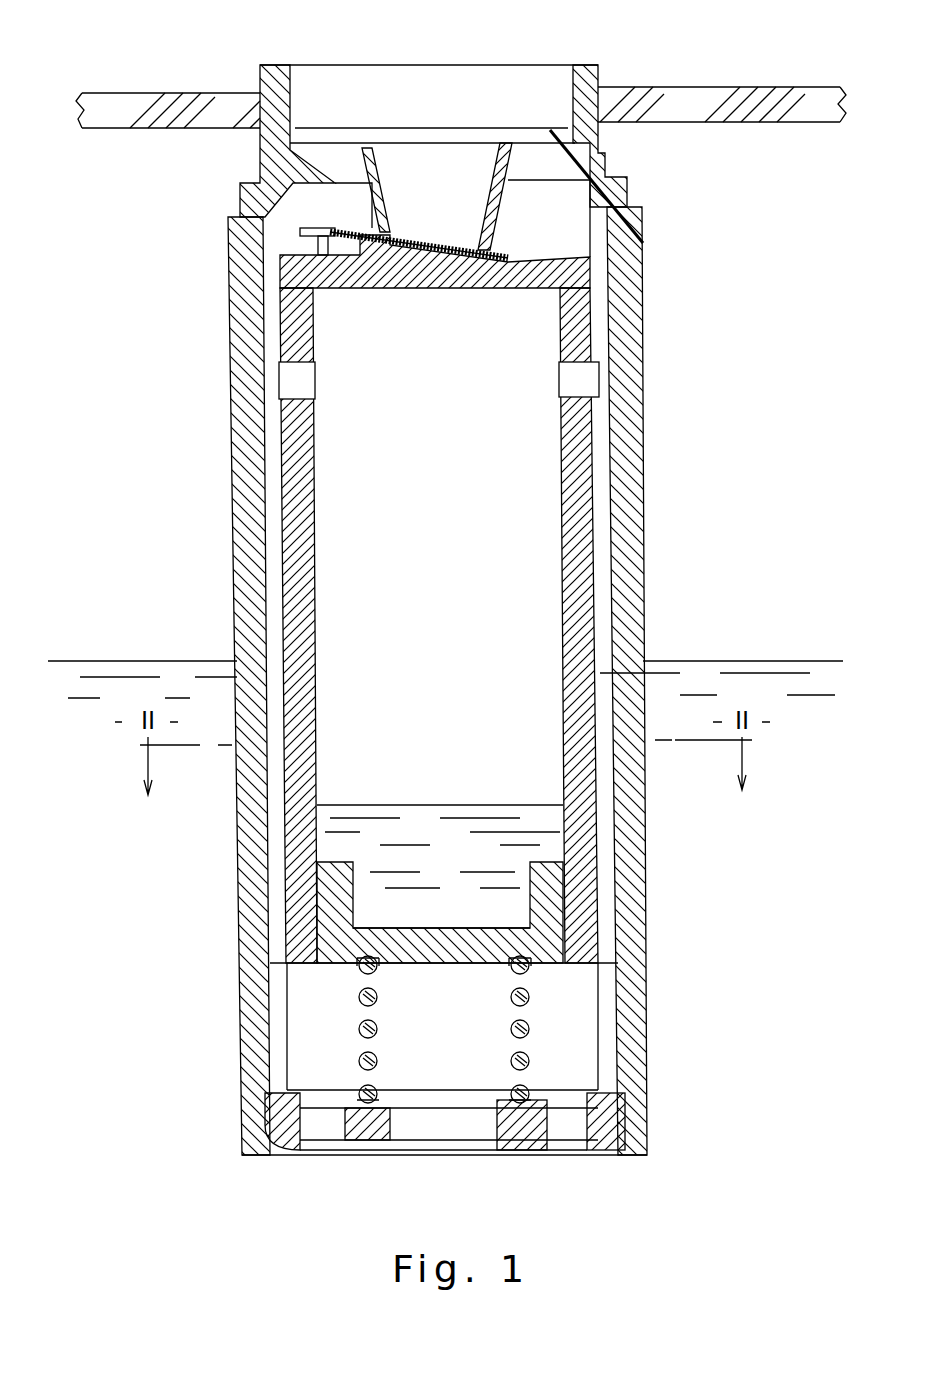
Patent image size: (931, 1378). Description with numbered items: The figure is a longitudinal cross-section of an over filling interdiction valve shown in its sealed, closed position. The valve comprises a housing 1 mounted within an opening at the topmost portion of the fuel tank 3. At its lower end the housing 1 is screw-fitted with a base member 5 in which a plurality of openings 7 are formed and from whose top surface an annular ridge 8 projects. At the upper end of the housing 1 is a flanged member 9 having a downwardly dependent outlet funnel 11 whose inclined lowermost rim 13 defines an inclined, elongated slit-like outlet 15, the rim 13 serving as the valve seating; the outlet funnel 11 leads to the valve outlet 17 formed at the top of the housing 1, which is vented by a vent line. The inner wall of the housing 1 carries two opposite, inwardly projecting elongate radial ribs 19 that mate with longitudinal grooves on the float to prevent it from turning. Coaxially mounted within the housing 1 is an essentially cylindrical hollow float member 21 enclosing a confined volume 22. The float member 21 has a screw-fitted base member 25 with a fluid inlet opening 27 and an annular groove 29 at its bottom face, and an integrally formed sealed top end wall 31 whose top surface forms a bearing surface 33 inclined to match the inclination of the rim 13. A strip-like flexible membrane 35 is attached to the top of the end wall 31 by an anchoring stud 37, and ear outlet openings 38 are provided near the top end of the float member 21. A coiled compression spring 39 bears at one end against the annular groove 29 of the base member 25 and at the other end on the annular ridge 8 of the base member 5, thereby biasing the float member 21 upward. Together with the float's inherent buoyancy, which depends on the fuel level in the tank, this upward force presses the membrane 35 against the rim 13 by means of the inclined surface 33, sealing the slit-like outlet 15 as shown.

The housing 1 is at (643, 505).
The fuel tank 3 is at (134, 100).
The base member 5 is at (607, 1113).
The openings 7 is at (430, 1123).
The annular ridge 8 is at (493, 1093).
The flanged member 9 is at (535, 181).
The outlet funnel 11 is at (495, 213).
The inclined lowermost rim 13 is at (470, 300).
The slit-like outlet 15 is at (413, 225).
The valve outlet 17 is at (381, 85).
The radial ribs 19 is at (290, 1027).
The float member 21 is at (577, 574).
The confined volume 22 is at (468, 546).
The base member 25 is at (337, 897).
The fluid inlet opening 27 is at (437, 948).
The annular groove 29 is at (527, 966).
The sealed top end wall 31 is at (370, 282).
The bearing surface 33 is at (388, 250).
The flexible membrane 35 is at (462, 252).
The anchoring stud 37 is at (370, 222).
The ear outlet openings 38 is at (577, 378).
The coiled compression spring 39 is at (530, 1061).